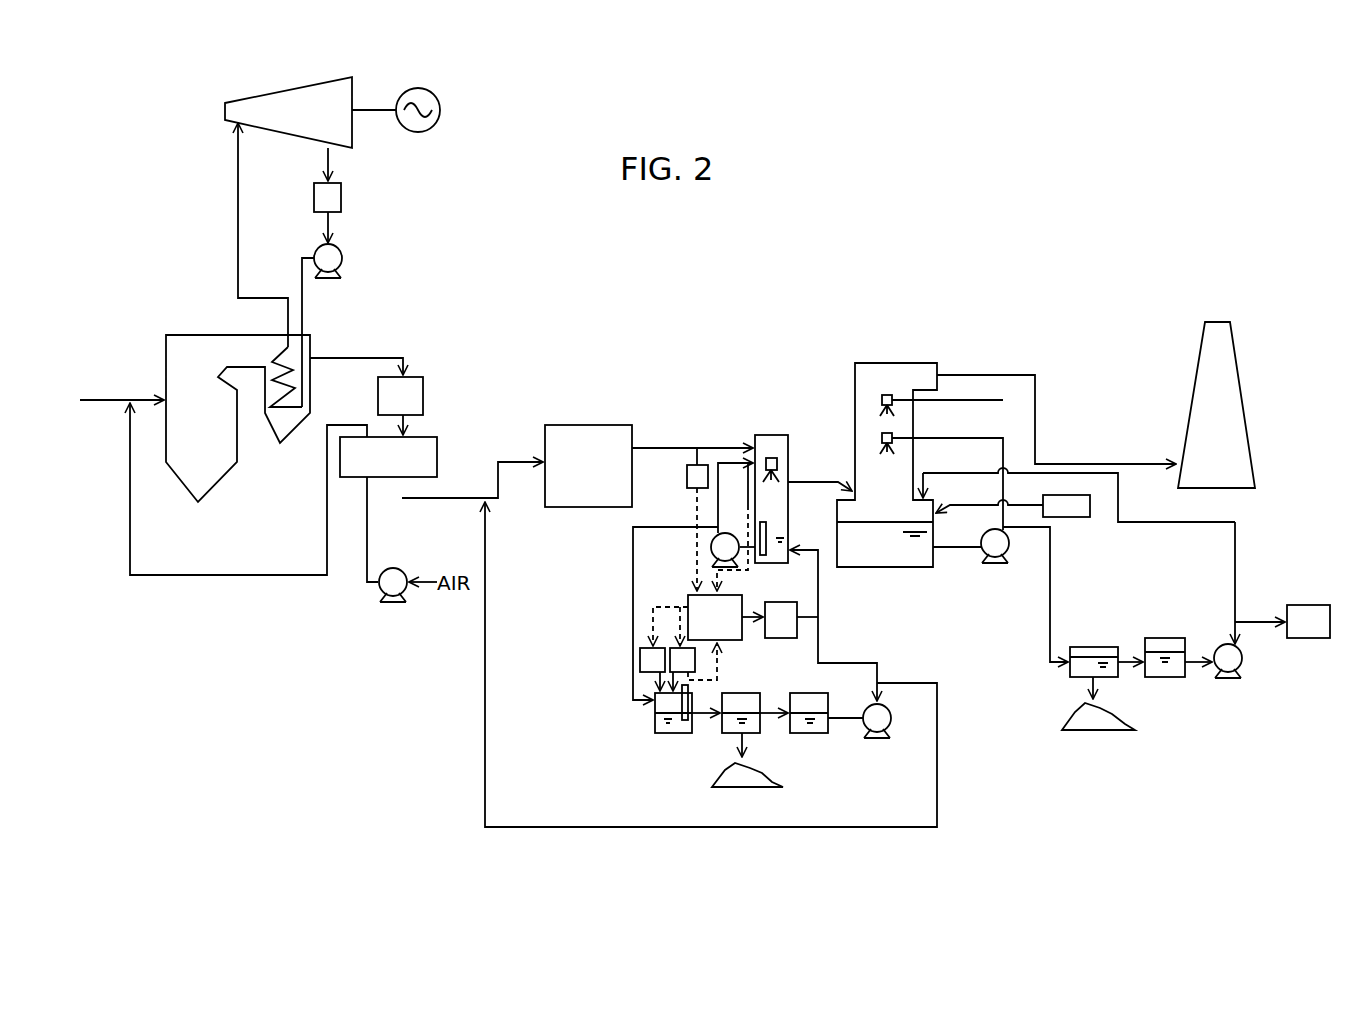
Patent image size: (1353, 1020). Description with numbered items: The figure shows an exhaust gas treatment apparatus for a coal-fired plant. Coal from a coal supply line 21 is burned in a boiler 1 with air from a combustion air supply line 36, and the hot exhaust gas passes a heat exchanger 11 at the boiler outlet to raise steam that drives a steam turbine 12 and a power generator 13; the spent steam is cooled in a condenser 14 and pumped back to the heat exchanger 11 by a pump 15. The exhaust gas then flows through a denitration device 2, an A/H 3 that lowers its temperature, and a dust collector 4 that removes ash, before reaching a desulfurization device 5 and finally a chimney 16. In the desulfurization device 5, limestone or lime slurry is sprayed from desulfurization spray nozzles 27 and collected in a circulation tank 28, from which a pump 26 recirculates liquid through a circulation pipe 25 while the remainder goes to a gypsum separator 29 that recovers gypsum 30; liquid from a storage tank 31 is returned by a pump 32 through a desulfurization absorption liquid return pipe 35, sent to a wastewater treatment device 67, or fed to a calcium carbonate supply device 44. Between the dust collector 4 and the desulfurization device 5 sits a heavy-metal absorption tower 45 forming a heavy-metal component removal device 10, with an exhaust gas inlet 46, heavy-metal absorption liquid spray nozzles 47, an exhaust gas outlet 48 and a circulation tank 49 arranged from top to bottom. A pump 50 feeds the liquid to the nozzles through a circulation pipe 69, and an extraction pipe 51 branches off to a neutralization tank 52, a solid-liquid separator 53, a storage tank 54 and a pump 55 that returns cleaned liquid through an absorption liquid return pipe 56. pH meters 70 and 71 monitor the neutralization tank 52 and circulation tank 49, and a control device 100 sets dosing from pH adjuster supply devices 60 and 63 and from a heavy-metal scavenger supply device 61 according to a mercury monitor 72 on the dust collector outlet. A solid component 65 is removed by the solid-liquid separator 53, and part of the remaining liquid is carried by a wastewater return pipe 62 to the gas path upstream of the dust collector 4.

The boiler 1 is at (196, 334).
The denitration device 2 is at (412, 376).
The A/H 3 is at (425, 437).
The dust collector 4 is at (582, 425).
The desulfurization device 5 is at (898, 358).
The heavy-metal component removal device 10 is at (782, 368).
The heat exchanger 11 is at (303, 350).
The steam turbine 12 is at (262, 92).
The power generator 13 is at (430, 90).
The condenser 14 is at (342, 198).
The pump 15 is at (342, 259).
The chimney 16 is at (1238, 380).
The coal supply line 21 is at (98, 398).
The circulation pipe 25 is at (1002, 458).
The pump 26 is at (995, 566).
The desulfurization spray nozzles 27 is at (878, 397).
The circulation tank 28 is at (895, 568).
The gypsum separator 29 is at (1068, 676).
The gypsum 30 is at (1092, 732).
The storage tank 31 is at (1165, 679).
The pump 32 is at (1230, 678).
The desulfurization absorption liquid return pipe 35 is at (1238, 550).
The combustion air supply line 36 is at (272, 578).
The calcium carbonate supply device 44 is at (1083, 519).
The heavy-metal absorption tower 45 is at (767, 430).
The exhaust gas inlet 46 is at (757, 445).
The heavy-metal absorption liquid spray nozzles 47 is at (778, 459).
The exhaust gas outlet 48 is at (790, 482).
The circulation tank 49 is at (768, 565).
The pump 50 is at (727, 533).
The extraction pipe 51 is at (632, 552).
The neutralization tank 52 is at (652, 730).
The solid-liquid separator 53 is at (718, 723).
The storage tank 54 is at (812, 734).
The pump 55 is at (880, 738).
The absorption liquid return pipe 56 is at (820, 644).
The pH adjuster supply device 60 is at (639, 659).
The heavy-metal scavenger supply device 61 is at (696, 666).
The wastewater return pipe 62 is at (940, 726).
The pH adjuster supply device 63 is at (780, 639).
The solid component 65 is at (750, 788).
The wastewater treatment device 67 is at (1315, 604).
The circulation pipe 69 is at (722, 462).
The pH meter 70 is at (684, 722).
The pH meter 71 is at (768, 527).
The mercury monitor 72 is at (687, 471).
The control device 100 is at (687, 596).